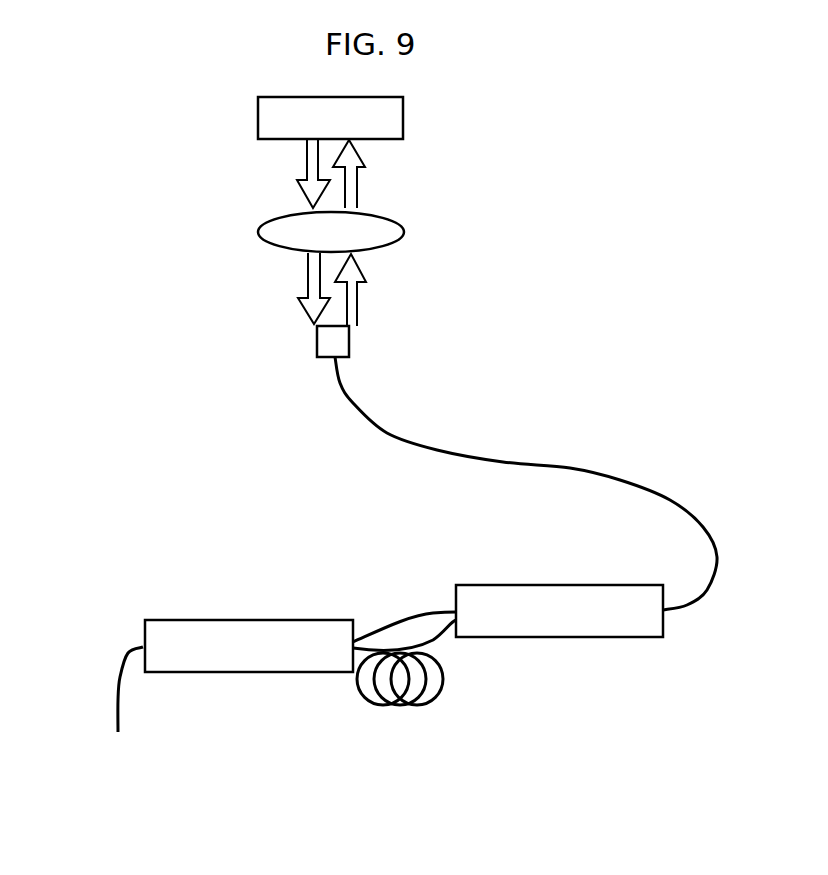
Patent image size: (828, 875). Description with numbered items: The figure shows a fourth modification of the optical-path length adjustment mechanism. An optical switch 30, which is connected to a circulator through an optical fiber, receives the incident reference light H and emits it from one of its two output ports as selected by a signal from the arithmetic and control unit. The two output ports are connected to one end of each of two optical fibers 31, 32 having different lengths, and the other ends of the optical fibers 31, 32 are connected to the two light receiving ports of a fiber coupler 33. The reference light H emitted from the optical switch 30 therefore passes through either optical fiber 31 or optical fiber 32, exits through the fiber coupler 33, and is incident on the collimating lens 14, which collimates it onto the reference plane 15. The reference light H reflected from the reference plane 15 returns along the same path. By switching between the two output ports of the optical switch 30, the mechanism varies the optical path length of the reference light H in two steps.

The reference plane 15 is at (397, 122).
The collimating lens 14 is at (405, 232).
The reference light H is at (357, 183).
The optical switch 30 is at (235, 618).
The optical fiber 31 is at (407, 632).
The optical fiber 32 is at (442, 677).
The fiber coupler 33 is at (598, 637).